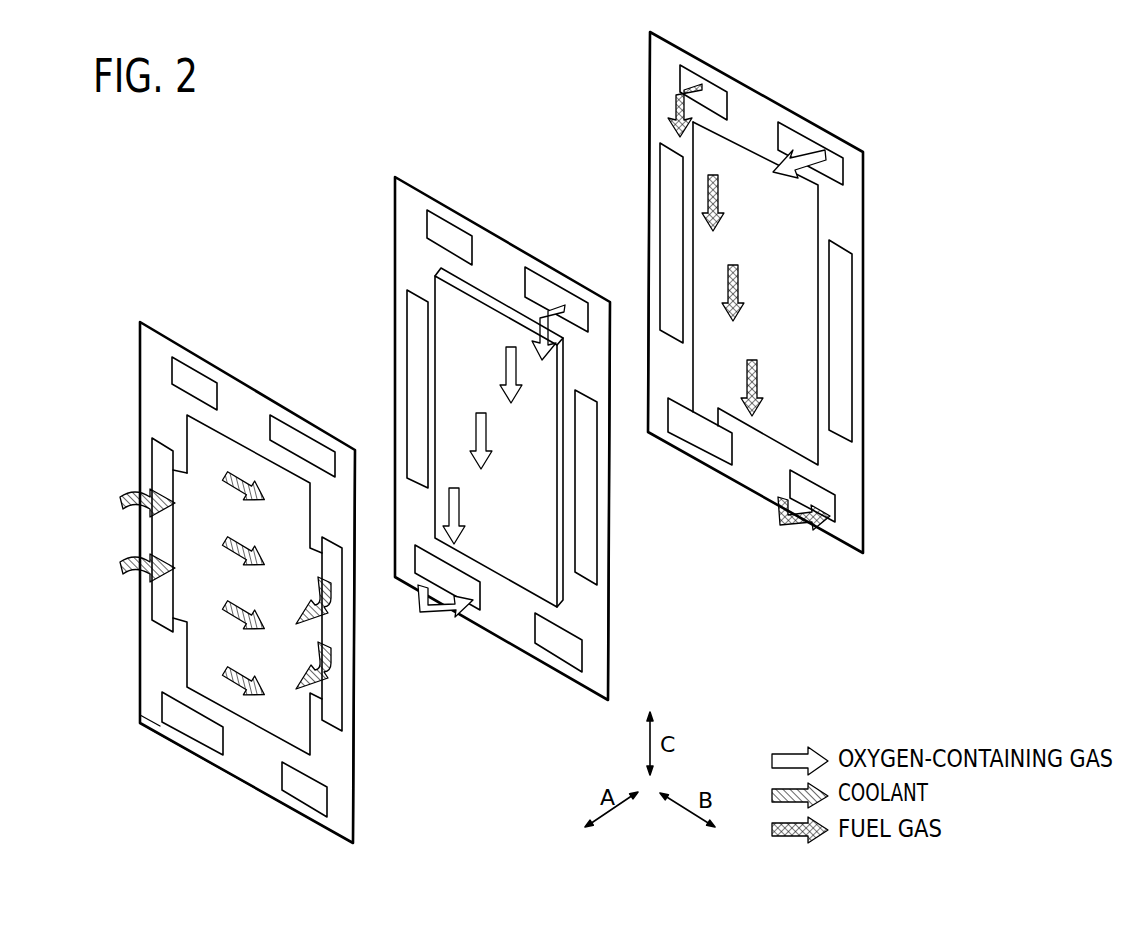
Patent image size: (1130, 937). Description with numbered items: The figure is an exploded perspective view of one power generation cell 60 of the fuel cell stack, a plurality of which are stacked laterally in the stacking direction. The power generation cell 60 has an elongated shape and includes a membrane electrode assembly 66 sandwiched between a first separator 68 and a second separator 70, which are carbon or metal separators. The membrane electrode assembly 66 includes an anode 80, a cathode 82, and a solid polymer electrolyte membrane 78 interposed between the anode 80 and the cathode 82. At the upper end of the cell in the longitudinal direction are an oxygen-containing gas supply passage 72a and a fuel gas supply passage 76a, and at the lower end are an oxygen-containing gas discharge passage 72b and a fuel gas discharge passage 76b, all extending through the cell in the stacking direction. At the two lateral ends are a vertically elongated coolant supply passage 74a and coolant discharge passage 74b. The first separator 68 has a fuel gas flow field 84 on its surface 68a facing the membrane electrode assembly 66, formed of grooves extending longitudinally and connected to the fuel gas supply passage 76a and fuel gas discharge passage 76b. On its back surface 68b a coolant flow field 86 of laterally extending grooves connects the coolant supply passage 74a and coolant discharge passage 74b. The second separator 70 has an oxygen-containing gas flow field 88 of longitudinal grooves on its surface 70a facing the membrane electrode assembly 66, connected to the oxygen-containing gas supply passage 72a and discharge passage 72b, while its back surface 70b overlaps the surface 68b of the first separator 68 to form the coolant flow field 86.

The power generation cell 60 is at (225, 196).
The membrane electrode assembly 66 is at (395, 177).
The first separator 68 is at (648, 48).
The second separator 70 is at (139, 321).
The surface of second separator 70a is at (188, 747).
The back surface of second separator 70b is at (150, 718).
The oxygen-containing gas supply passage 72a is at (307, 448).
The oxygen-containing gas discharge passage 72b is at (178, 715).
The coolant supply passage 74a is at (160, 602).
The coolant discharge passage 74b is at (333, 712).
The fuel gas supply passage 76a is at (180, 378).
The fuel gas discharge passage 76b is at (317, 800).
The solid polymer electrolyte membrane 78 is at (590, 618).
The anode 80 is at (507, 330).
The cathode 82 is at (470, 307).
The fuel gas flow field 84 is at (720, 153).
The coolant flow field 86 is at (222, 443).
The oxygen-containing gas flow field 88 is at (245, 463).
The surface of first separator 68a is at (660, 423).
The back surface of first separator 68b is at (712, 462).